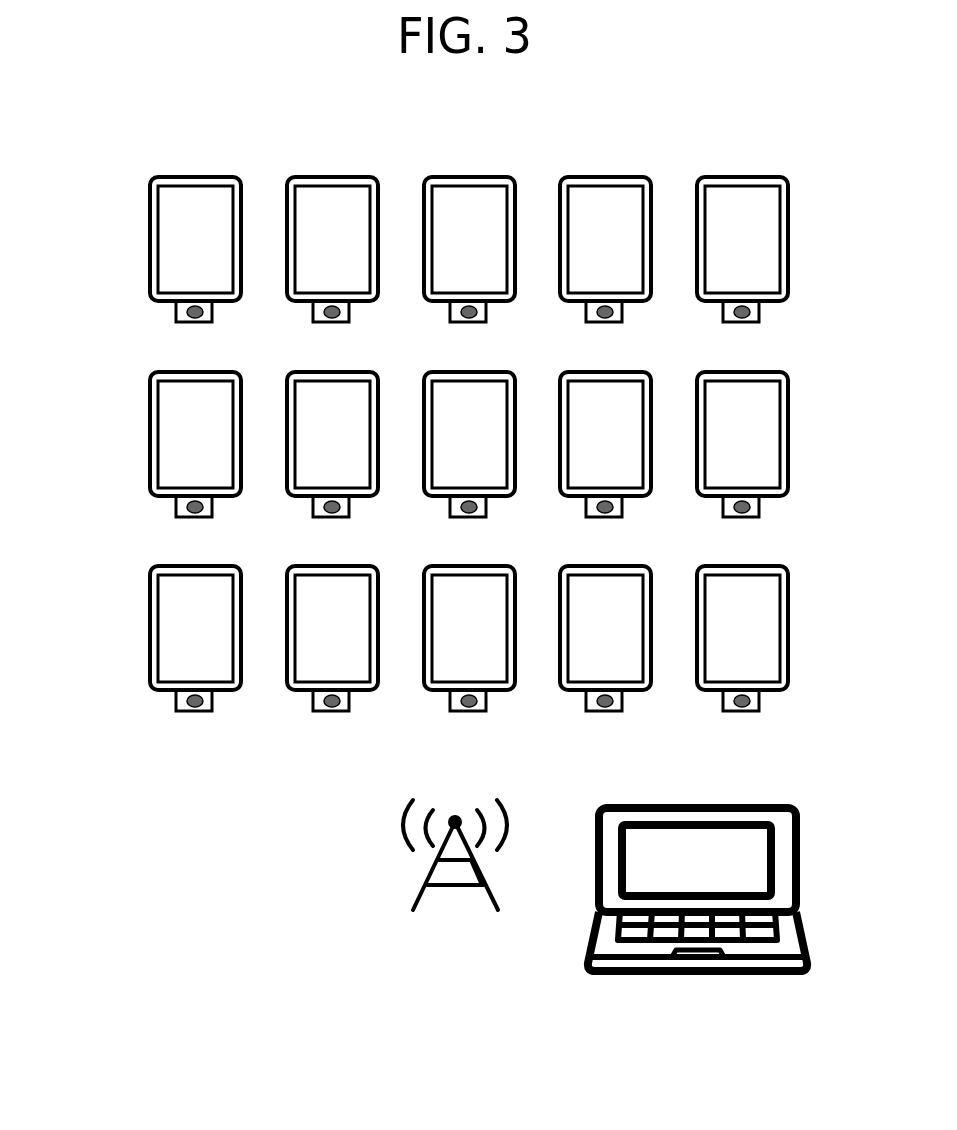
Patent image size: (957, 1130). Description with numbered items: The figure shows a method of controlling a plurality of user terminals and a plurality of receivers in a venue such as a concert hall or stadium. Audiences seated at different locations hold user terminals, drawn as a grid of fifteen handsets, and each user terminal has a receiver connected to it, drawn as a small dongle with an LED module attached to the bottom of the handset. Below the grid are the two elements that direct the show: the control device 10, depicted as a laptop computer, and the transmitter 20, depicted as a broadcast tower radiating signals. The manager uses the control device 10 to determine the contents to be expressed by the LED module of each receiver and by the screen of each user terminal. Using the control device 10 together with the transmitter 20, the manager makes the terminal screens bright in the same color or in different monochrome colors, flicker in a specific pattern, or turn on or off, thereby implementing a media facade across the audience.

The transmitter 20 is at (500, 800).
The control device 10 is at (756, 807).